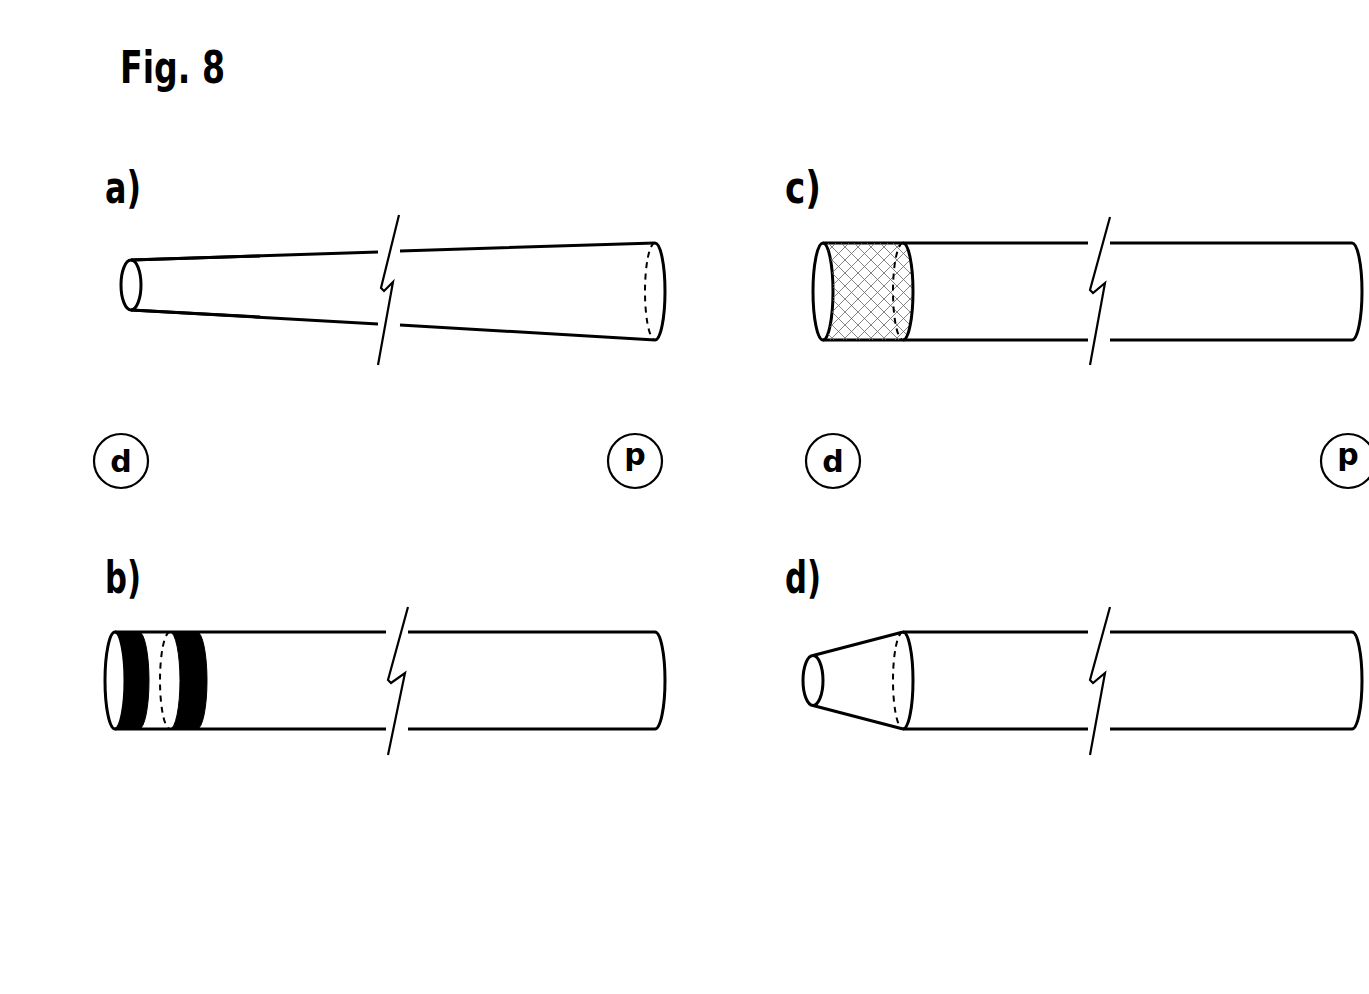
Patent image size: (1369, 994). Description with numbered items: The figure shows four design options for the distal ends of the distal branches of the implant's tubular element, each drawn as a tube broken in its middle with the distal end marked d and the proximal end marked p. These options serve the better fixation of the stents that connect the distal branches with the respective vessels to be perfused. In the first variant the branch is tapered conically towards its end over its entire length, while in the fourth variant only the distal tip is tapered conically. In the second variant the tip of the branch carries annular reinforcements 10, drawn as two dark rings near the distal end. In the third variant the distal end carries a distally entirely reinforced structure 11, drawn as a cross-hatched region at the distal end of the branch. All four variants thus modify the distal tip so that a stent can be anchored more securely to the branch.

The annular reinforcements 10 is at (131, 731).
The distally entirely reinforced structure 11 is at (862, 243).